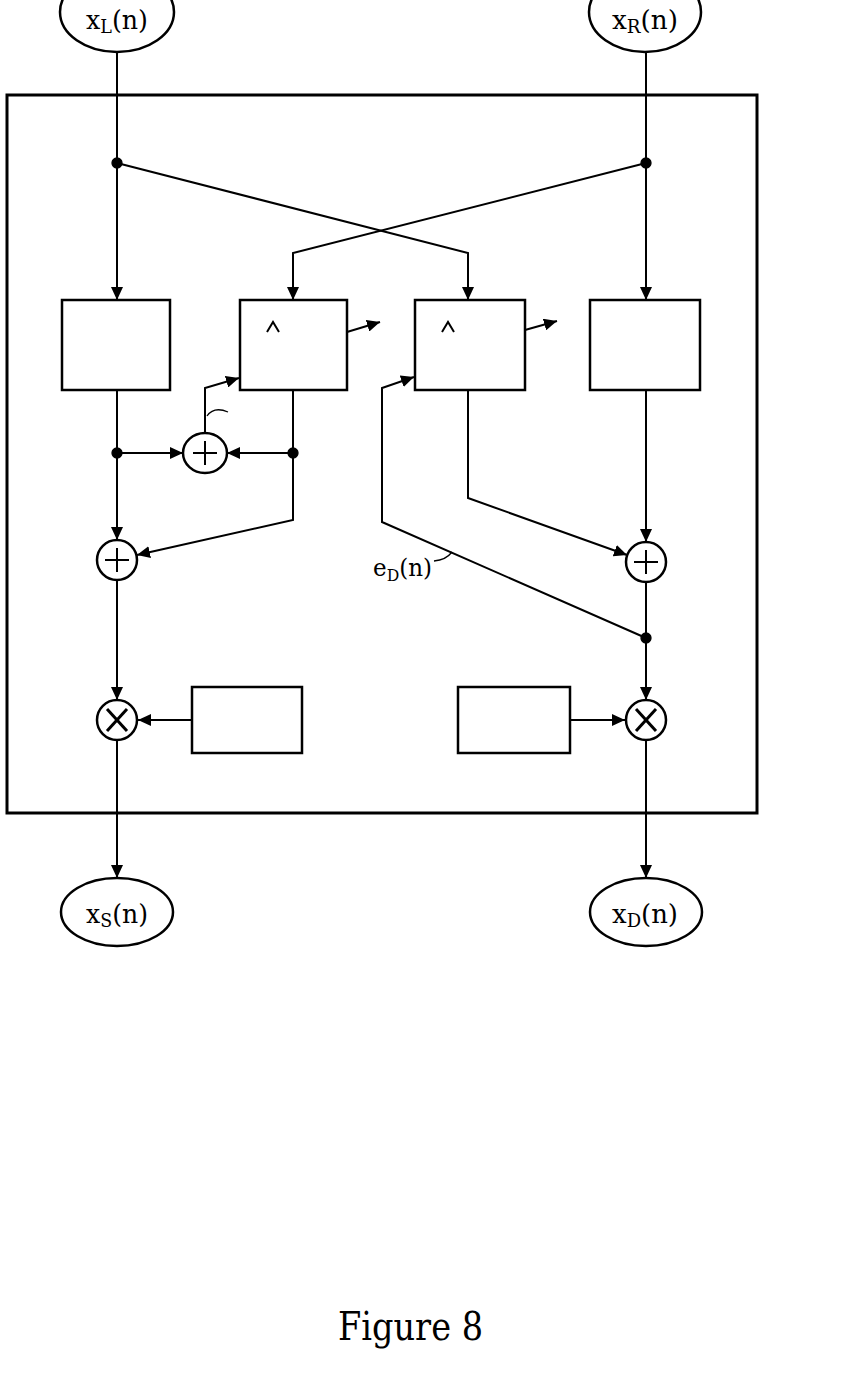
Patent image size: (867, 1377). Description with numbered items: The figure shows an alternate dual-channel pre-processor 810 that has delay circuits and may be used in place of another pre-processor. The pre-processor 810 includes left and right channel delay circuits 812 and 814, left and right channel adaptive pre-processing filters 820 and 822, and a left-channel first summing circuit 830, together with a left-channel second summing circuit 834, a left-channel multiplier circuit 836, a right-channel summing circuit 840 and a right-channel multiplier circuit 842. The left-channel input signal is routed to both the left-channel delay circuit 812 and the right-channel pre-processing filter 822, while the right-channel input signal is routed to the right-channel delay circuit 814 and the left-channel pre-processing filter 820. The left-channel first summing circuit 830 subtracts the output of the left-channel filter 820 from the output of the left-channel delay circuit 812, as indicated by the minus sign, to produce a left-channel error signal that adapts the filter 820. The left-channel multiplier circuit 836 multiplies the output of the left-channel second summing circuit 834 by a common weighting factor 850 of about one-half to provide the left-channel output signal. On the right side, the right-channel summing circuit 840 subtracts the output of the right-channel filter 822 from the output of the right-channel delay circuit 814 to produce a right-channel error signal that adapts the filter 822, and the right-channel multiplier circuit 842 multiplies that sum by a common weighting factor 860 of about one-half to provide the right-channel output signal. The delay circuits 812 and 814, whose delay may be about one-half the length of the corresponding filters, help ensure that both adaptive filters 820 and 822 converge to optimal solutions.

The dual-channel pre-processor 810 is at (585, 156).
The left-channel delay circuit 812 is at (162, 300).
The right-channel delay circuit 814 is at (598, 300).
The left-channel adaptive pre-processing filter 820 is at (248, 300).
The right-channel adaptive pre-processing filter 822 is at (510, 300).
The left-channel first summing circuit 830 is at (184, 467).
The left-channel second summing circuit 834 is at (136, 574).
The left-channel multiplier circuit 836 is at (132, 705).
The right-channel summing circuit 840 is at (660, 576).
The right-channel multiplier circuit 842 is at (657, 705).
The common weighting factor 850 is at (277, 687).
The common weighting factor 860 is at (485, 687).